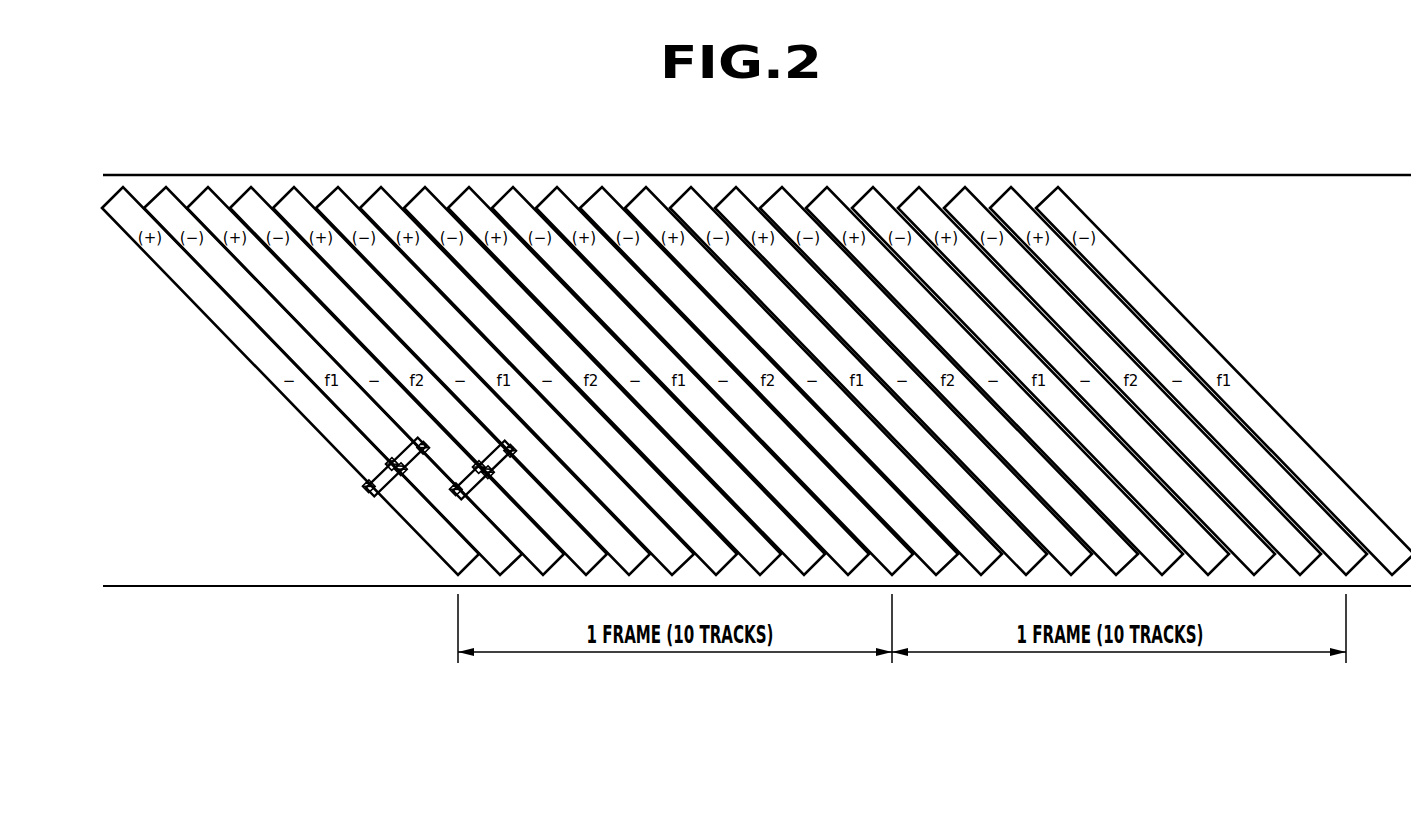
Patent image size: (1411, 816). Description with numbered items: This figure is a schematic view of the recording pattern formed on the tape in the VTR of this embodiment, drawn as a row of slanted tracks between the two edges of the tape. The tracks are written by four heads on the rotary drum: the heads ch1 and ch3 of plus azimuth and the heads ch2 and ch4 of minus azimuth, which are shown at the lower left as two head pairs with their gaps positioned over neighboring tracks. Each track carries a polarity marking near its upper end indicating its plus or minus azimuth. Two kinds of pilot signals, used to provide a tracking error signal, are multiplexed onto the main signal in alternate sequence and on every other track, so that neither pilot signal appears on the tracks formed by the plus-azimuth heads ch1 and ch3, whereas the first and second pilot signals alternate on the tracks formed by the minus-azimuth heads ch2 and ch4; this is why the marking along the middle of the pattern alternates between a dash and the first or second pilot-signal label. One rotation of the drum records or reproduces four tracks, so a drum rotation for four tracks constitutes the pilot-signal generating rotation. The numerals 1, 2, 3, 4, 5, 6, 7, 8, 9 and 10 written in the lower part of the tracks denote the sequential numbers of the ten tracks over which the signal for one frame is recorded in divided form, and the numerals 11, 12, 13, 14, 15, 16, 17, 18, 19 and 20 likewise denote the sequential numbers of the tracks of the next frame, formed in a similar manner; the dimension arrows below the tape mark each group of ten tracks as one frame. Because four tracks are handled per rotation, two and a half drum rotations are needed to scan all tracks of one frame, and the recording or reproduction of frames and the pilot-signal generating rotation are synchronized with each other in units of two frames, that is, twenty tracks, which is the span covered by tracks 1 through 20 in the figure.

The head of plus azimuth ch1 is at (455, 489).
The head of minus azimuth ch2 is at (478, 460).
The head of plus azimuth ch3 is at (487, 478).
The head of minus azimuth ch4 is at (512, 449).
The track sequential number 1 is at (290, 381).
The track sequential number 2 is at (333, 381).
The track sequential number 3 is at (375, 381).
The track sequential number 4 is at (418, 381).
The track sequential number 5 is at (461, 381).
The track sequential number 6 is at (505, 381).
The track sequential number 7 is at (548, 381).
The track sequential number 8 is at (592, 381).
The track sequential number 9 is at (636, 381).
The track sequential number 10 is at (680, 381).
The track sequential number 11 is at (724, 381).
The track sequential number 12 is at (769, 381).
The track sequential number 13 is at (813, 381).
The track sequential number 14 is at (858, 381).
The track sequential number 15 is at (903, 381).
The track sequential number 16 is at (949, 381).
The track sequential number 17 is at (994, 381).
The track sequential number 18 is at (1040, 381).
The track sequential number 19 is at (1086, 381).
The track sequential number 20 is at (1132, 381).